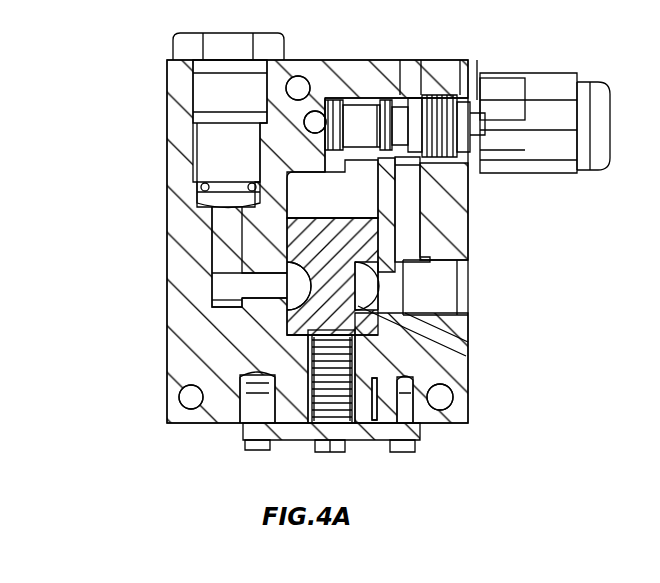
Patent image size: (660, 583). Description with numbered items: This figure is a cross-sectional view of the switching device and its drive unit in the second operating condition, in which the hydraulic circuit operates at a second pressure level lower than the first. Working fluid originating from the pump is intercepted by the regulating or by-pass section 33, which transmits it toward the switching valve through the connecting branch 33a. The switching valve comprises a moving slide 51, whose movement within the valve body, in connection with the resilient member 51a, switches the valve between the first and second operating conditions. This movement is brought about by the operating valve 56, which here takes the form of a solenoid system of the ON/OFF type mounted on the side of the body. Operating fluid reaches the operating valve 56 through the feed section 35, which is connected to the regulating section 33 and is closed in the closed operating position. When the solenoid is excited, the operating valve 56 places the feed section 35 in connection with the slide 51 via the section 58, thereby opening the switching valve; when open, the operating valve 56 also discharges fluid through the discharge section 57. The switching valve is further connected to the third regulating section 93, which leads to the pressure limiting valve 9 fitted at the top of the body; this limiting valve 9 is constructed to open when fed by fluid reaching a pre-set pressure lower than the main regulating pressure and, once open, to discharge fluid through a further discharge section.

The pressure limiting valve 9 is at (205, 95).
The third regulating section 93 is at (228, 253).
The discharge section 57 is at (350, 113).
The section 58 is at (364, 158).
The operating valve 56 is at (575, 92).
The feed section 35 is at (418, 207).
The regulating or by-pass section 33 is at (420, 285).
The connecting branch 33a is at (367, 330).
The moving slide 51 is at (432, 338).
The resilient member 51a is at (350, 433).